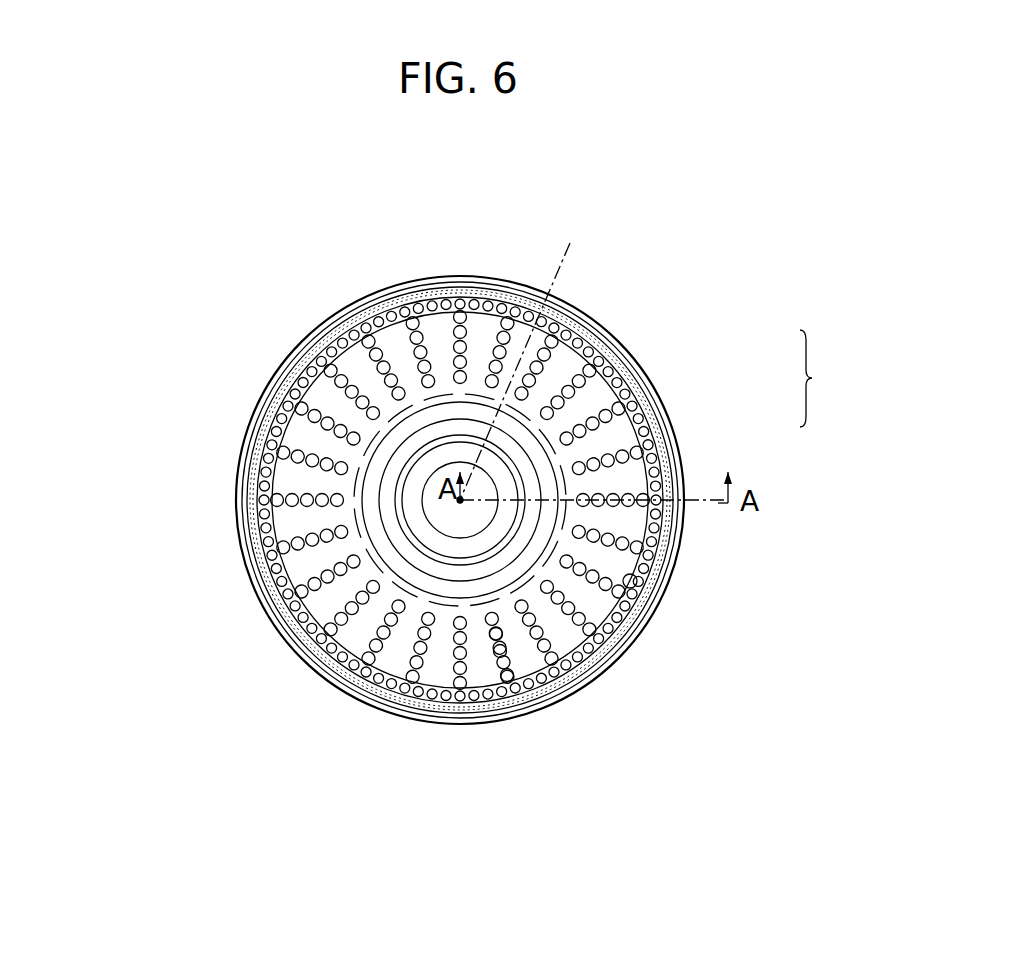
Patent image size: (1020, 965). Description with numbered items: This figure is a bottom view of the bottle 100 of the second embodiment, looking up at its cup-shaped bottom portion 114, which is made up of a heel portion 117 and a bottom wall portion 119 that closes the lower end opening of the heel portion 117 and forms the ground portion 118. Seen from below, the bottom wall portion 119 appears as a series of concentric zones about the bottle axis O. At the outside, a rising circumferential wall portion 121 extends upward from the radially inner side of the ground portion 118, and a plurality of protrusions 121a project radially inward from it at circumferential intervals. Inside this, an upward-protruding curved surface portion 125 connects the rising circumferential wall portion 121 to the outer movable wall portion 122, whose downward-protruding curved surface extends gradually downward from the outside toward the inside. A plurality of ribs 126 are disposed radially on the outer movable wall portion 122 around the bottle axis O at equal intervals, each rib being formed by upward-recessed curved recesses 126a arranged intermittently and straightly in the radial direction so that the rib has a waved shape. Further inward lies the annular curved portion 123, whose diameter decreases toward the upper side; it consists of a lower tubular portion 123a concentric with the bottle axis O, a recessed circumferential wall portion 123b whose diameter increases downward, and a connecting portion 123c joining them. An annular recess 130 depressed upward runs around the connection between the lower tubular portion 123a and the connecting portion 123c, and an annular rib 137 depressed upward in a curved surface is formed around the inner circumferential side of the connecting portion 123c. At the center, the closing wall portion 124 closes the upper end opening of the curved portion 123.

The bottle 100 is at (673, 192).
The bottom portion 114 is at (830, 378).
The heel portion 117 is at (658, 375).
The ground portion 118 is at (676, 528).
The bottom wall portion 119 is at (663, 427).
The rising circumferential wall portion 121 is at (637, 585).
The protrusions 121a is at (417, 693).
The outer movable wall portion 122 is at (557, 638).
The curved portion 123 is at (395, 578).
The lower tubular portion 123a is at (367, 542).
The recessed circumferential wall portion 123b is at (457, 450).
The connecting portion 123c is at (427, 443).
The closing wall portion 124 is at (442, 518).
The curved surface portion 125 is at (587, 343).
The ribs 126 is at (490, 663).
The recesses 126a is at (502, 655).
The annular recess 130 is at (373, 490).
The annular rib 137 is at (393, 447).
The bottle axis O is at (528, 355).